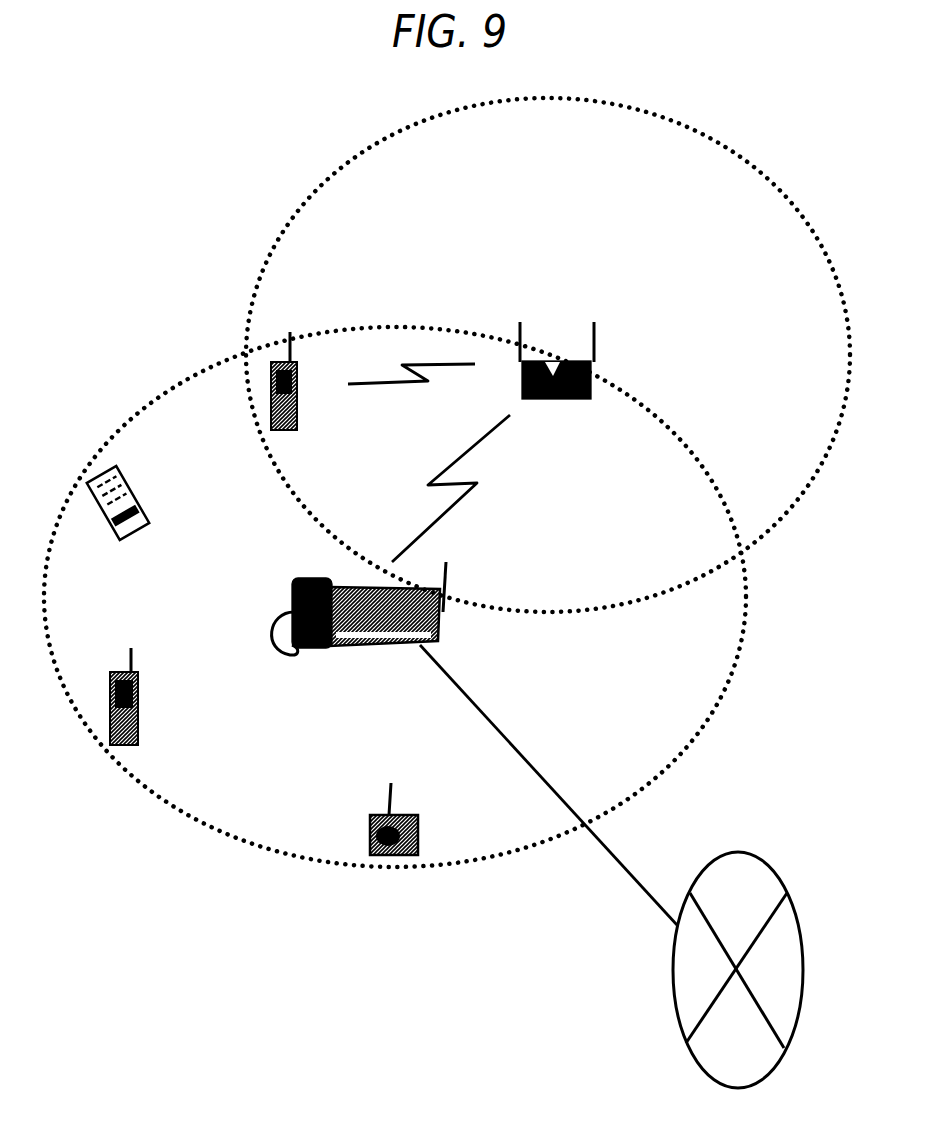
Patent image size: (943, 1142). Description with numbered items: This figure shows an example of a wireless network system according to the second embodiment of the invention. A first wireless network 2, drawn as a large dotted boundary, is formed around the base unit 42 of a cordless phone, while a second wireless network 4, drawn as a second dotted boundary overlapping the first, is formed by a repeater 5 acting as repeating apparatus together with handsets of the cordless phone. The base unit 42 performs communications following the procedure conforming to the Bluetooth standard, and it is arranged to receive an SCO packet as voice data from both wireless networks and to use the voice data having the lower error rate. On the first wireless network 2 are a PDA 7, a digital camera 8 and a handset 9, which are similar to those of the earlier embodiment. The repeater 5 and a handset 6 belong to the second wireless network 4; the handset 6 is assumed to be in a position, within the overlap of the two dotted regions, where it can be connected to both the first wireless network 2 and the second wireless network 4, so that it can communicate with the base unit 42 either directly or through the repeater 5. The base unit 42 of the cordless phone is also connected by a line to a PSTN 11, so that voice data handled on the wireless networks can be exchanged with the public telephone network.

The first wireless network 2 is at (125, 416).
The second wireless network 4 is at (312, 190).
The repeater 5 is at (590, 370).
The handset 6 is at (297, 393).
The PDA 7 is at (135, 500).
The digital camera 8 is at (418, 825).
The handset 9 is at (138, 717).
The PSTN 11 is at (742, 855).
The base unit 42 is at (440, 624).